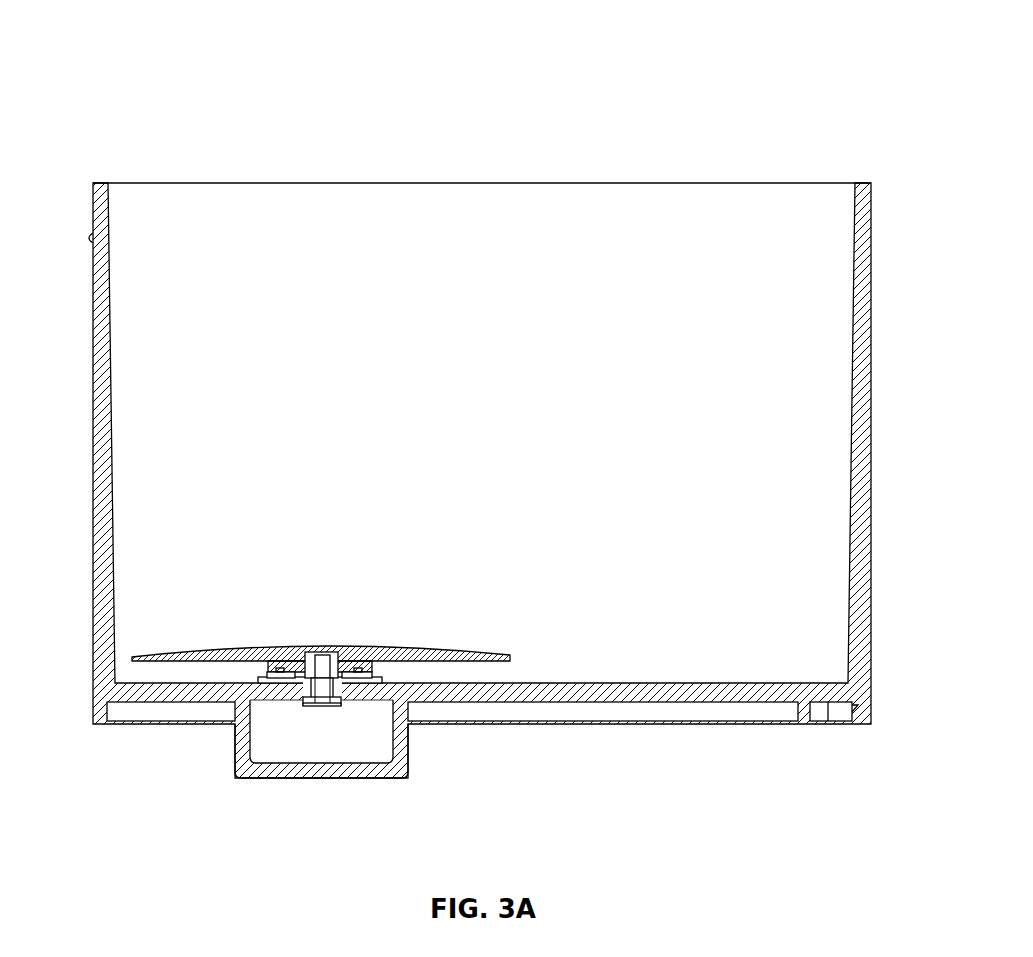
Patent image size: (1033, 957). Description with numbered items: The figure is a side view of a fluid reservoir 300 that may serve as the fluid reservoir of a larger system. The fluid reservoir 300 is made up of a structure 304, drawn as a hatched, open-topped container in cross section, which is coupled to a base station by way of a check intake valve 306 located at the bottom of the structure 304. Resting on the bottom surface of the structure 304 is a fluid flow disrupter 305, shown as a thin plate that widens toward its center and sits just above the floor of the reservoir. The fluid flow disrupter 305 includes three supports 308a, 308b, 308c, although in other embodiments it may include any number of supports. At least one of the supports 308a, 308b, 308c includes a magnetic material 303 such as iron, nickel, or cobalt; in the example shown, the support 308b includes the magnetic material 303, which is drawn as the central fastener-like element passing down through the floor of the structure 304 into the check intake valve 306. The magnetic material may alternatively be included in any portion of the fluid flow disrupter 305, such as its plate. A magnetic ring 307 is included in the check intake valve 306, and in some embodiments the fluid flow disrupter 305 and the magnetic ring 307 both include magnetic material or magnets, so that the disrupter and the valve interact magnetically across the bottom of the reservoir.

The fluid reservoir 300 is at (118, 62).
The magnetic material 303 is at (318, 652).
The structure 304 is at (862, 237).
The fluid flow disrupter 305 is at (465, 648).
The check intake valve 306 is at (305, 745).
The magnetic ring 307 is at (330, 703).
The support 308a is at (274, 667).
The support 308b is at (300, 704).
The support 308c is at (364, 668).